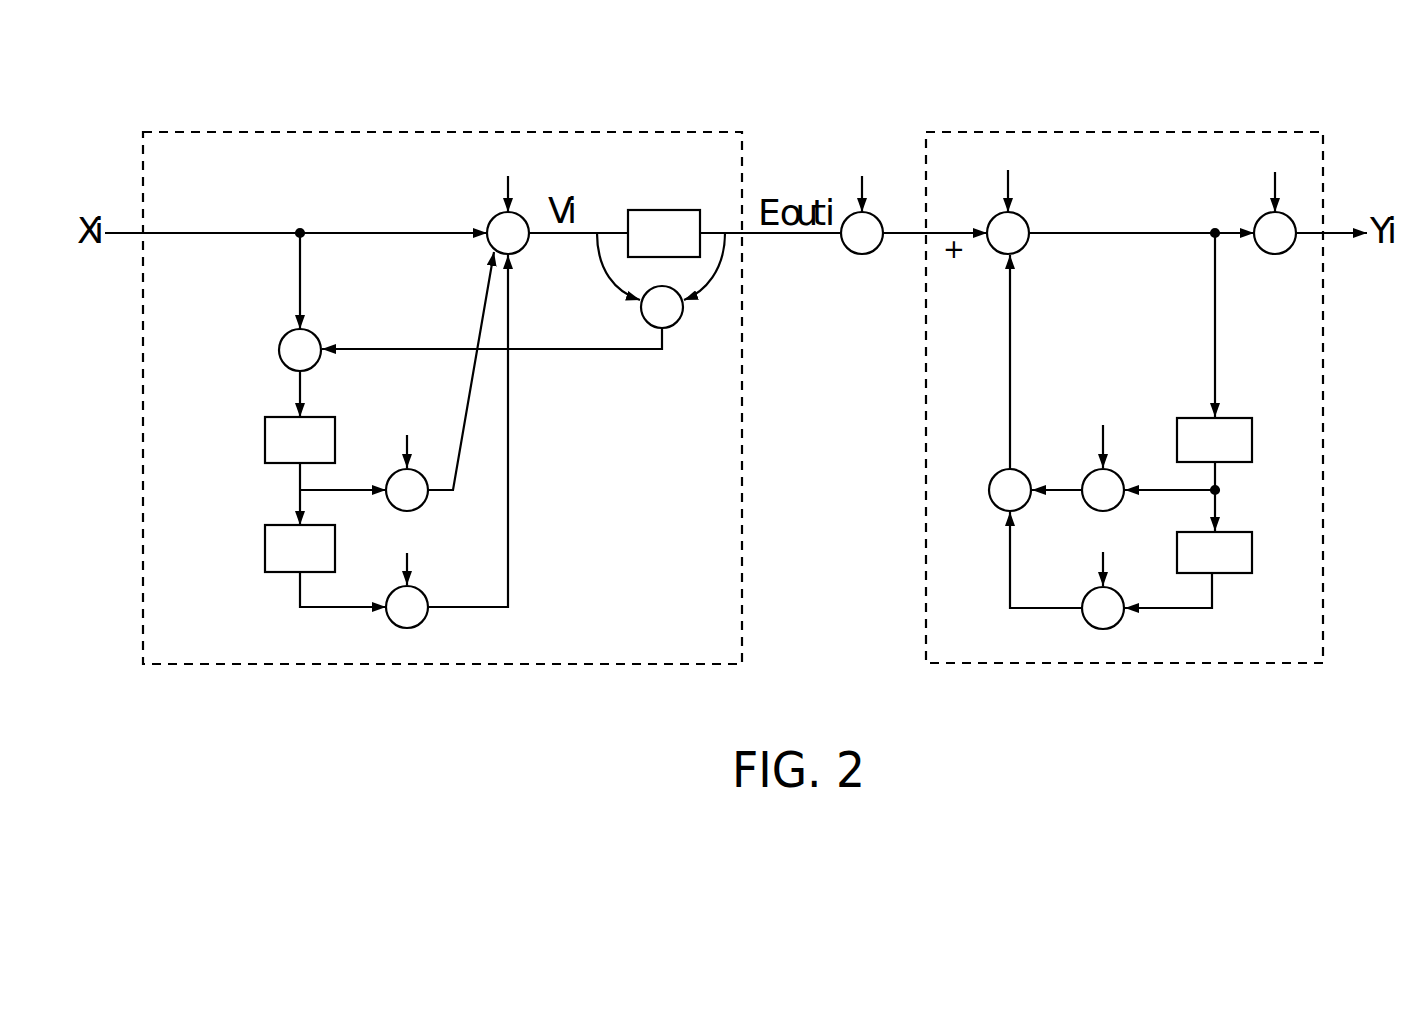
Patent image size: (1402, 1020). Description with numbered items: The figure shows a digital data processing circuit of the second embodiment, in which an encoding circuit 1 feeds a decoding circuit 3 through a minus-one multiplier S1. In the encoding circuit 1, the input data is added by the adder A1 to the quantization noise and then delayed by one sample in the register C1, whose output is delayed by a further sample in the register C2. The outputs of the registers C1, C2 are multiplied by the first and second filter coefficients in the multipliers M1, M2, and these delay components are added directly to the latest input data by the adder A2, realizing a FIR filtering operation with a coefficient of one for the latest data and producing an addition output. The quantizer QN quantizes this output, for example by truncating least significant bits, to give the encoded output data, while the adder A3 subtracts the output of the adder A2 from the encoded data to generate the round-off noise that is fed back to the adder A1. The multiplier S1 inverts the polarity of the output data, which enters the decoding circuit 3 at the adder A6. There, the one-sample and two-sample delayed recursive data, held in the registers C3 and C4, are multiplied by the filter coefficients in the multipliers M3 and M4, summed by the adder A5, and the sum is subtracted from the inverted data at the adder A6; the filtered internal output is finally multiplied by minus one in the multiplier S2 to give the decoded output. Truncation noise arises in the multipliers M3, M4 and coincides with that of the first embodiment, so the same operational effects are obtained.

The encoding circuit 1 is at (382, 664).
The decoding circuit 3 is at (1113, 663).
The adder A1 is at (281, 339).
The adder A2 is at (489, 225).
The adder A3 is at (676, 328).
The adder A5 is at (1000, 508).
The adder A6 is at (1022, 250).
The register C1 is at (370, 422).
The register C2 is at (370, 533).
The register C3 is at (1252, 440).
The register C4 is at (1252, 548).
The multiplier M1 is at (420, 507).
The multiplier M2 is at (420, 624).
The multiplier M3 is at (1086, 479).
The multiplier M4 is at (1118, 624).
The multiplier S1 is at (852, 252).
The multiplier S2 is at (1268, 254).
The quantizer QN is at (660, 210).